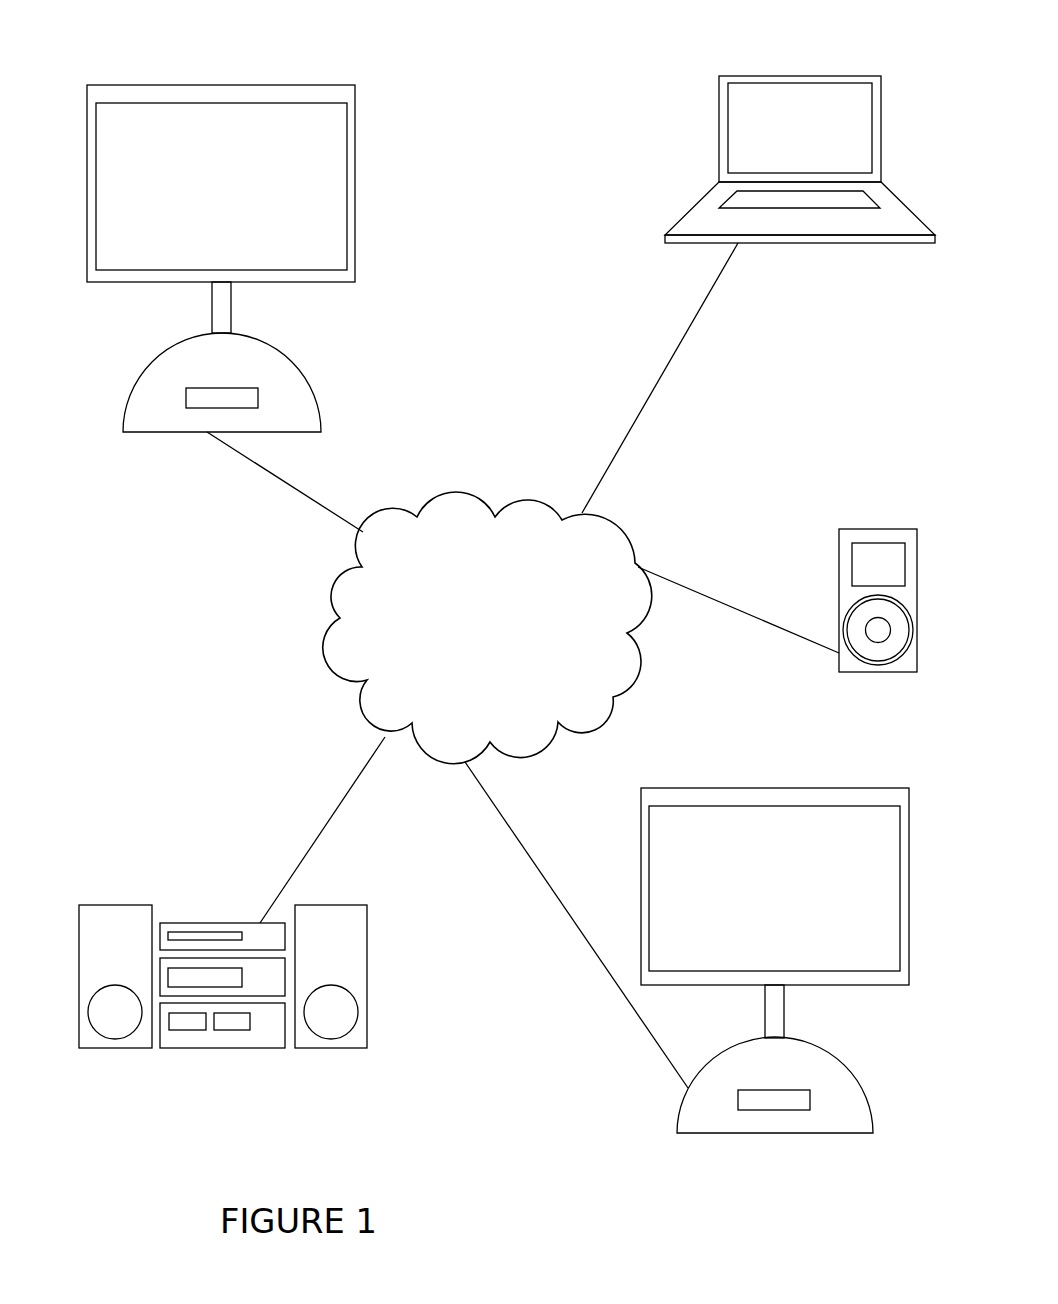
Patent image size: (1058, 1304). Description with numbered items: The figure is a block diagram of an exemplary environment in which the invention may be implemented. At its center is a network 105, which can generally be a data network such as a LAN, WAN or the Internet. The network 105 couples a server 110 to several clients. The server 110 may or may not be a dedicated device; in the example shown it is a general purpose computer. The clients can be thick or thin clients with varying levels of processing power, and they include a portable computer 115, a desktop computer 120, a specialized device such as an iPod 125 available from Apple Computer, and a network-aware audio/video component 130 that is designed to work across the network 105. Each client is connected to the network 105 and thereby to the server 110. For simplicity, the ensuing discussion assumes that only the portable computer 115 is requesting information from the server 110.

The network 105 is at (482, 498).
The server 110 is at (300, 372).
The portable computer 115 is at (817, 76).
The desktop computer 120 is at (855, 1072).
The iPod 125 is at (880, 529).
The network-aware audio/video component 130 is at (185, 923).